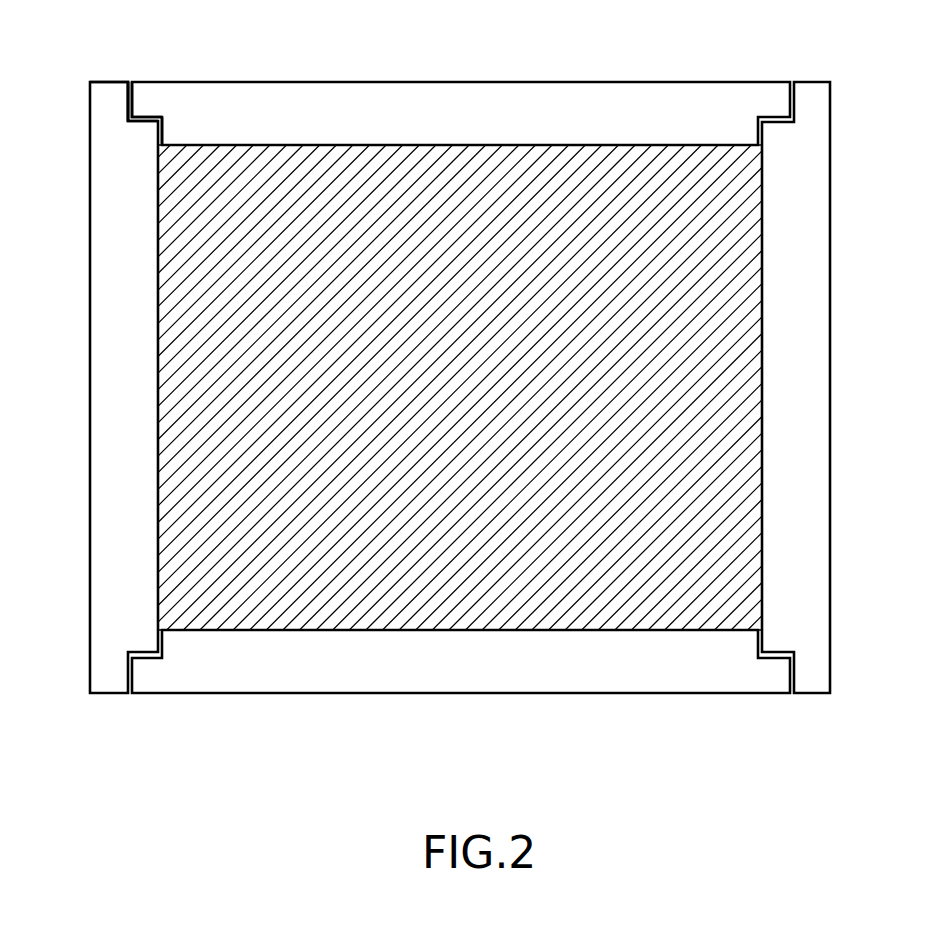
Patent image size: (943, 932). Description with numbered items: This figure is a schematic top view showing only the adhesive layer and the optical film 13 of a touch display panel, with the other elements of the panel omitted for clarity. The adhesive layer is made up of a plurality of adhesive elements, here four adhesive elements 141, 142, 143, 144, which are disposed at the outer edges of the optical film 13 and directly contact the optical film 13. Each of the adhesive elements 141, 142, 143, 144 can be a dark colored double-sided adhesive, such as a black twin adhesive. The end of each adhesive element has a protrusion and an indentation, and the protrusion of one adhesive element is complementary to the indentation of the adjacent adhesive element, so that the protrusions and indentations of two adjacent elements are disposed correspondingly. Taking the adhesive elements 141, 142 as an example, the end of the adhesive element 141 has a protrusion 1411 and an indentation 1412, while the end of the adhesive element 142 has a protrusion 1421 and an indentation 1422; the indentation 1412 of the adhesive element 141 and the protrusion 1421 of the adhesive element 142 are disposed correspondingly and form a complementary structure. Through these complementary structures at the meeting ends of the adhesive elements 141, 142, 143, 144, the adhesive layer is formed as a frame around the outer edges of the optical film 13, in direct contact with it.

The optical film 13 is at (435, 188).
The adhesive element 141 is at (117, 259).
The protrusion 1411 is at (98, 82).
The indentation 1412 is at (131, 82).
The adhesive element 142 is at (627, 117).
The protrusion 1421 is at (152, 93).
The indentation 1422 is at (163, 118).
The adhesive element 143 is at (815, 220).
The adhesive element 144 is at (602, 670).